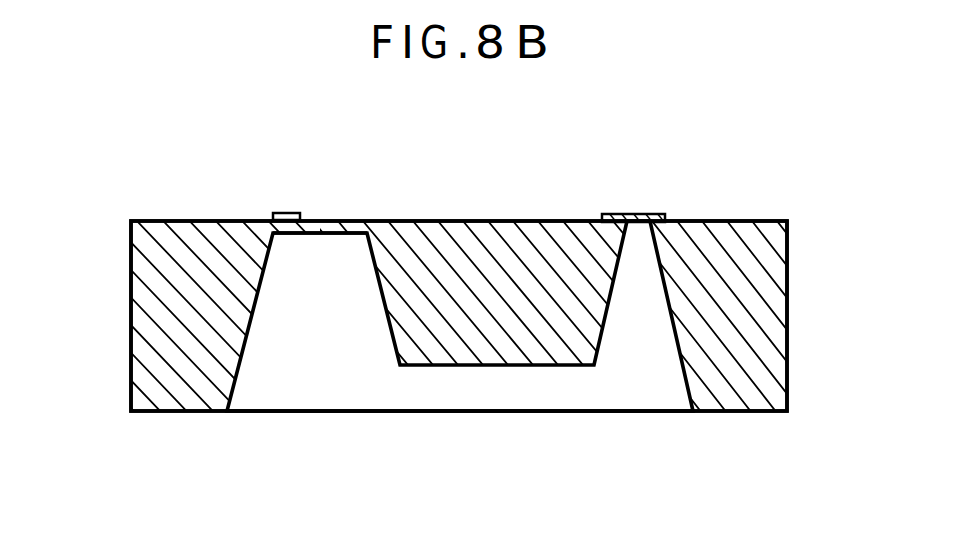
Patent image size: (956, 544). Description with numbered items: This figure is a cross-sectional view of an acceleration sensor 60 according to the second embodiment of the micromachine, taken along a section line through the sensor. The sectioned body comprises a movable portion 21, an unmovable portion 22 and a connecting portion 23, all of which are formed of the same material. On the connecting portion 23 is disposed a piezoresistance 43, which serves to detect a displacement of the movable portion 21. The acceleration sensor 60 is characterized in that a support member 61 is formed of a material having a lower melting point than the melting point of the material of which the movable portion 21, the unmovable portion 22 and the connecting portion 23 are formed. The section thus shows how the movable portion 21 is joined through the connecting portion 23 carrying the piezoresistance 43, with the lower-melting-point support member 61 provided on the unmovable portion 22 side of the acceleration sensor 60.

The movable portion 21 is at (493, 346).
The unmovable portion 22 is at (753, 226).
The connecting portion 23 is at (327, 219).
The piezoresistance 43 is at (282, 212).
The acceleration sensor 60 is at (108, 292).
The support member 61 is at (643, 213).